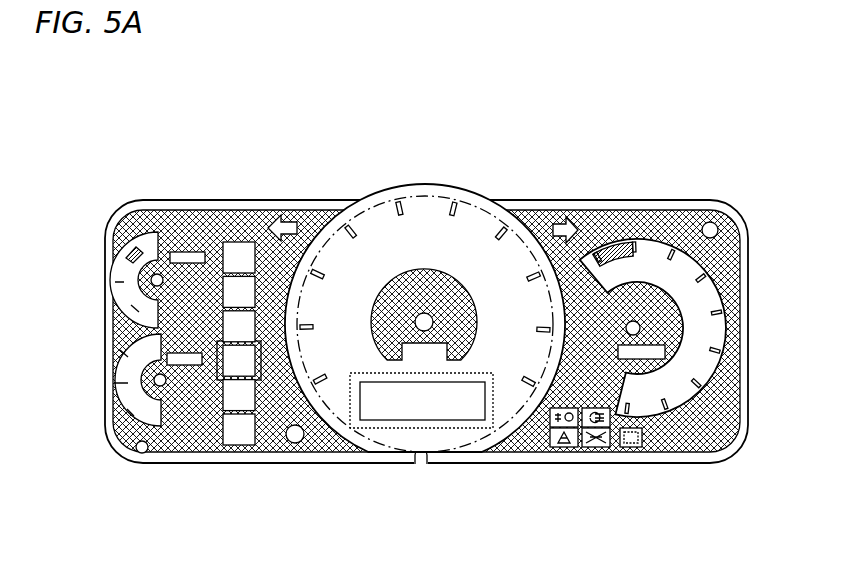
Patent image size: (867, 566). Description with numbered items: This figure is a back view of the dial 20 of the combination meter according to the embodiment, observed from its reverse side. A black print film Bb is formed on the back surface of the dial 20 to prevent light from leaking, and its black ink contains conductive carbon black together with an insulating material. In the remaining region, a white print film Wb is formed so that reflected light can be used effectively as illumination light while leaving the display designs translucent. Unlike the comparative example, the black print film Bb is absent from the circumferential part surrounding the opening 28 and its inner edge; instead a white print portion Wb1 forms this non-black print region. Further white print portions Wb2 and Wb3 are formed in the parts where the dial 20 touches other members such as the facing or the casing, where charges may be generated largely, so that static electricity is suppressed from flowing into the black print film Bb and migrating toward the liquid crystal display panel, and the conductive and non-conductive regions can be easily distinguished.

The dial 20 is at (431, 281).
The black print film Bb is at (230, 236).
The white print film Wb is at (360, 223).
The white print portion Wb1 is at (452, 454).
The white print portion Wb2 is at (543, 228).
The white print portion Wb3 is at (653, 199).
The opening 28 is at (447, 410).